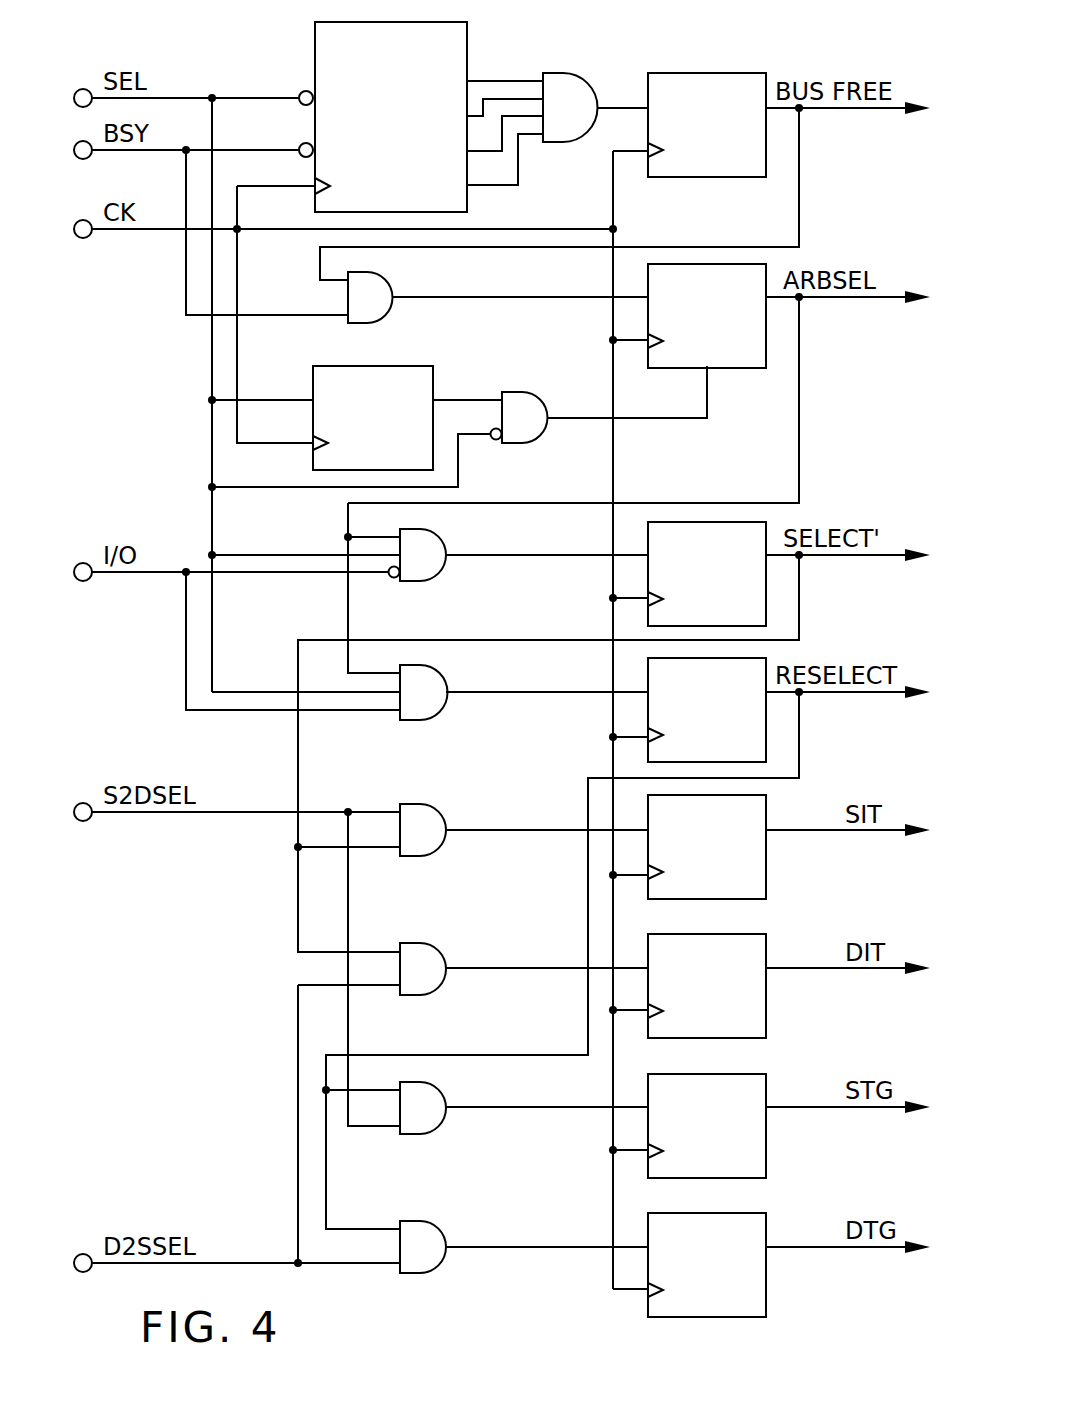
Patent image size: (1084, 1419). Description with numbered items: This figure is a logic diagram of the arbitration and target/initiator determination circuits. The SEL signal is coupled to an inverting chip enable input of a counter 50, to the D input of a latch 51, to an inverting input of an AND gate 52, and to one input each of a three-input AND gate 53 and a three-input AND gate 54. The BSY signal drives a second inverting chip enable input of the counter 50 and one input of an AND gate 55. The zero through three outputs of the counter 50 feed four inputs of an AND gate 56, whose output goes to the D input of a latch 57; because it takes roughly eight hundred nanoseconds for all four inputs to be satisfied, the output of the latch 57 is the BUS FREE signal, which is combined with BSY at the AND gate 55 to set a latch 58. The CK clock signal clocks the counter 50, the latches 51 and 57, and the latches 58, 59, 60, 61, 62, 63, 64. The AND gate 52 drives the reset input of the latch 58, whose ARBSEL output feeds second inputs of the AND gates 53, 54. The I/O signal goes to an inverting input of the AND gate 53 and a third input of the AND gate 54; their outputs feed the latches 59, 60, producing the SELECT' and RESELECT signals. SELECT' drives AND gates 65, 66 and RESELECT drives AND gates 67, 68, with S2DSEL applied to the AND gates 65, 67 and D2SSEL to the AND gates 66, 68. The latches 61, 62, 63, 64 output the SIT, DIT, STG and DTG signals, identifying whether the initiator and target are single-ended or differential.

The counter 50 is at (313, 50).
The latch 51 is at (420, 366).
The AND gate 52 is at (520, 432).
The AND gate 53 is at (437, 583).
The AND gate 54 is at (432, 715).
The AND gate 55 is at (385, 286).
The AND gate 56 is at (570, 72).
The latch 57 is at (732, 76).
The latch 58 is at (735, 366).
The latch 59 is at (692, 609).
The latch 60 is at (692, 746).
The latch 61 is at (692, 883).
The latch 62 is at (692, 1022).
The latch 63 is at (692, 1162).
The latch 64 is at (692, 1301).
The AND gate 65 is at (433, 843).
The AND gate 66 is at (440, 985).
The AND gate 67 is at (440, 1130).
The AND gate 68 is at (437, 1263).